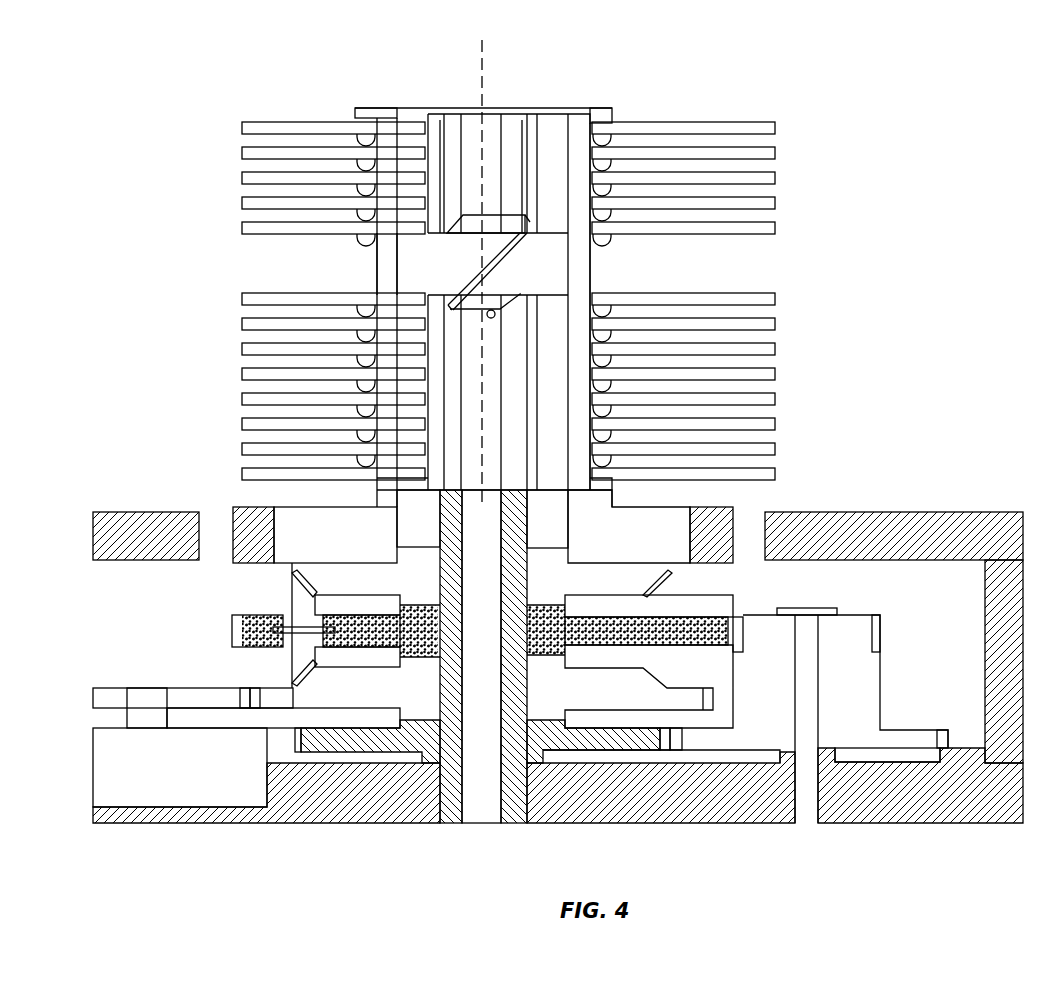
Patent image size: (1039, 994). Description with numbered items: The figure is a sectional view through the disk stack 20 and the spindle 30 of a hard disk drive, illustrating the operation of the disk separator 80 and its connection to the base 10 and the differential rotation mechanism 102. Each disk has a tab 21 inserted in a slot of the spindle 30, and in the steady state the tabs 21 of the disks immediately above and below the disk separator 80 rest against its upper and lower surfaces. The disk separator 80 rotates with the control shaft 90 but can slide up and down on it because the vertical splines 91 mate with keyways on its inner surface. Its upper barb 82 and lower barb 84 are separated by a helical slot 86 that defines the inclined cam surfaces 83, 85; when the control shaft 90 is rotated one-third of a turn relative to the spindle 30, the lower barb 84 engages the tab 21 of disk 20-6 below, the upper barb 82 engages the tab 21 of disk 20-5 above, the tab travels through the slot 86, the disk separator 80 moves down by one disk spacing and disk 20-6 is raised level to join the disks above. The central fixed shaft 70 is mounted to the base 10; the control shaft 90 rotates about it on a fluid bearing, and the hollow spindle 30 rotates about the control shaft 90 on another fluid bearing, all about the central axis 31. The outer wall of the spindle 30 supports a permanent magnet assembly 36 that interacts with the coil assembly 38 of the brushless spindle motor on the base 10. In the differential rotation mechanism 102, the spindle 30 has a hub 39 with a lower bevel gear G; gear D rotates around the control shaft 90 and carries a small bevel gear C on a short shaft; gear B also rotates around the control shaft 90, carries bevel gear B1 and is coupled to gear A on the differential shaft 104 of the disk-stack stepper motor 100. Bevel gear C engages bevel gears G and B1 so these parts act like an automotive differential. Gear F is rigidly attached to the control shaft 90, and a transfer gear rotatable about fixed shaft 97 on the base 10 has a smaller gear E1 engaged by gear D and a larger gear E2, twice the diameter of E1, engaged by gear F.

The base 10 is at (556, 820).
The disk stack 20 is at (451, 305).
The disk above the disk separator 20-5 is at (262, 234).
The disk below the disk separator 20-6 is at (508, 372).
The tab 21 is at (383, 290).
The spindle 30 is at (558, 118).
The axis 31 is at (485, 50).
The permanent magnet assembly 36 is at (246, 515).
The coil assembly 38 is at (118, 515).
The hub 39 is at (655, 515).
The fixed shaft 70 is at (475, 122).
The disk separator 80 is at (545, 262).
The upper barb 82 is at (540, 118).
The inclined cam surface 83 is at (530, 222).
The lower barb 84 is at (491, 310).
The inclined cam surface 85 is at (448, 305).
The helical slot 86 is at (530, 237).
The control shaft 90 is at (455, 120).
The vertical spline 91 is at (440, 120).
The fixed shaft 97 is at (810, 824).
The disk-stack stepper motor 100 is at (100, 776).
The differential rotation mechanism 102 is at (537, 703).
The differential shaft 104 is at (130, 690).
The gear A is at (245, 690).
The gear B is at (257, 710).
The bevel gear B1 is at (312, 676).
The bevel gear C is at (296, 583).
The gear D is at (236, 630).
The gear E1 is at (742, 635).
The gear E2 is at (940, 735).
The gear F is at (296, 735).
The bevel gear G is at (305, 580).